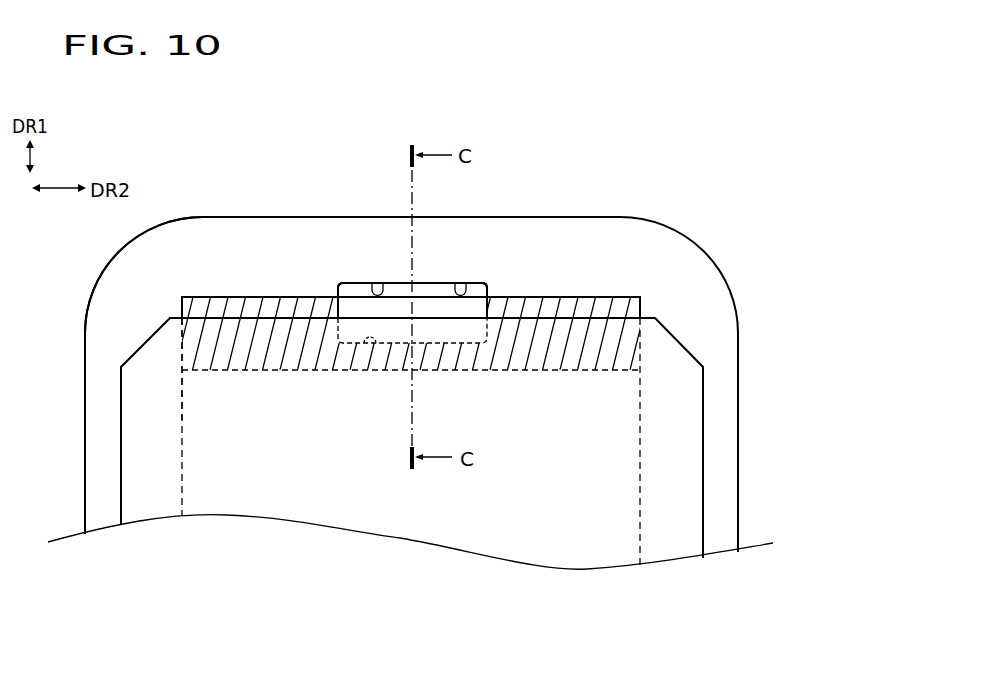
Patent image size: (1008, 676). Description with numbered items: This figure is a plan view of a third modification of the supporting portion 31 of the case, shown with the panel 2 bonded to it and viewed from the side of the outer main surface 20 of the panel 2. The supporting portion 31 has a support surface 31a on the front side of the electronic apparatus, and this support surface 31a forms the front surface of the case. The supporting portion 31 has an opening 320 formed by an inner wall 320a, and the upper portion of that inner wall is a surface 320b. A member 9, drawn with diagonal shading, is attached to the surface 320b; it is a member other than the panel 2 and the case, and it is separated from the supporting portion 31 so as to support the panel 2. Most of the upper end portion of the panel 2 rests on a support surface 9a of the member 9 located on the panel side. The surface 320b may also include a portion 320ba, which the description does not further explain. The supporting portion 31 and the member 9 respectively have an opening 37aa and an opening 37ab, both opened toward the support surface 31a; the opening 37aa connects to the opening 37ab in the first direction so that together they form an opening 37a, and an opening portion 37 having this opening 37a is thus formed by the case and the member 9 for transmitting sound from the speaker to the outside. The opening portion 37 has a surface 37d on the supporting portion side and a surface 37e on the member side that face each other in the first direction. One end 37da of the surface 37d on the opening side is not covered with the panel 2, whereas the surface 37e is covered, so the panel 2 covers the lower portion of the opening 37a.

The panel 2 is at (687, 430).
The outer main surface 20 is at (687, 493).
The supporting portion 31 is at (674, 243).
The support surface 31a is at (108, 293).
The member 9 is at (634, 308).
The support surface 9a is at (624, 297).
The opening 320 is at (182, 437).
The inner wall 320a is at (182, 402).
The surface 320b is at (210, 297).
The upper surface portion 320ba is at (316, 297).
The opening portion 37 is at (343, 307).
The opening 37a is at (583, 135).
The opening 37aa is at (467, 283).
The opening 37ab is at (484, 283).
The surface 37d is at (378, 283).
The one end 37da is at (442, 283).
The surface 37e is at (369, 345).